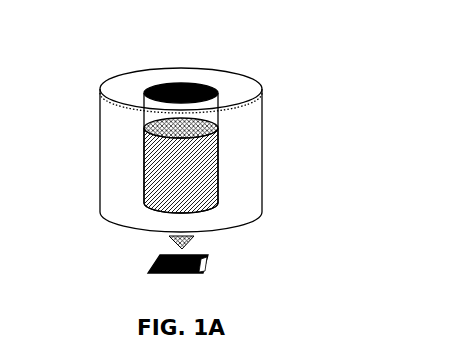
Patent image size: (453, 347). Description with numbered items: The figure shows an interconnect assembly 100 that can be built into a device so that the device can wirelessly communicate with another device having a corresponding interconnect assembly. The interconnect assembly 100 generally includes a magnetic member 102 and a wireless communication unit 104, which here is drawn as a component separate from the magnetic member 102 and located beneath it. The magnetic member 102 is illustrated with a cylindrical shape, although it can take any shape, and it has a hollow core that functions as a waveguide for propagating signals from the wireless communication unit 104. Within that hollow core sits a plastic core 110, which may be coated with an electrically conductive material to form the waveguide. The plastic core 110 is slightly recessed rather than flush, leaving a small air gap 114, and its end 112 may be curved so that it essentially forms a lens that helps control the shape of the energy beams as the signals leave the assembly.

The interconnect assembly 100 is at (211, 169).
The magnetic member 102 is at (100, 192).
The wireless communication unit 104 is at (155, 280).
The plastic core 110 is at (219, 175).
The end of the plastic core 112 is at (219, 119).
The air gap 114 is at (100, 107).